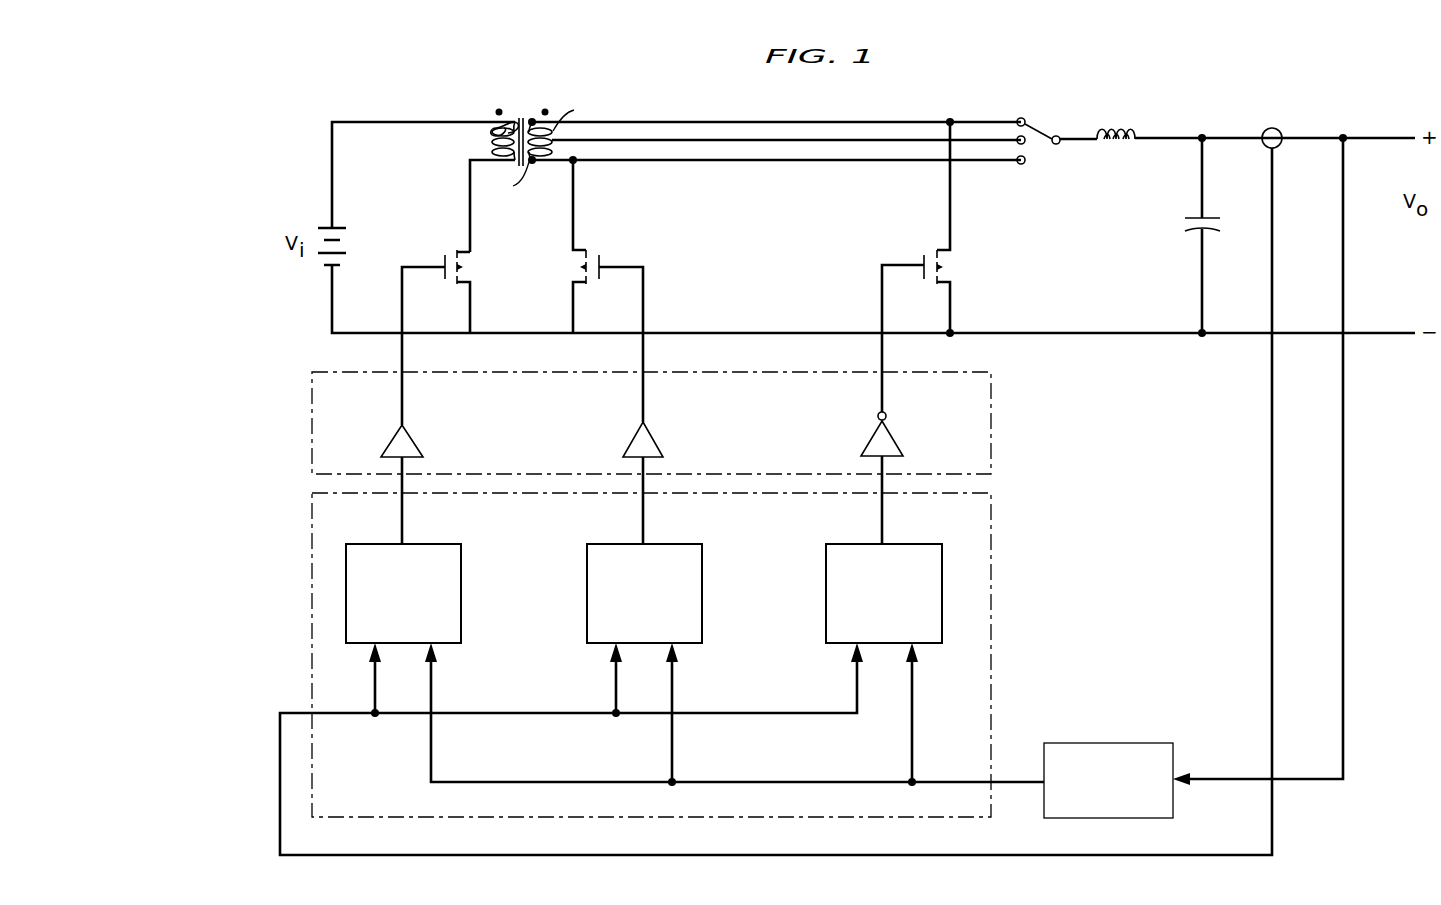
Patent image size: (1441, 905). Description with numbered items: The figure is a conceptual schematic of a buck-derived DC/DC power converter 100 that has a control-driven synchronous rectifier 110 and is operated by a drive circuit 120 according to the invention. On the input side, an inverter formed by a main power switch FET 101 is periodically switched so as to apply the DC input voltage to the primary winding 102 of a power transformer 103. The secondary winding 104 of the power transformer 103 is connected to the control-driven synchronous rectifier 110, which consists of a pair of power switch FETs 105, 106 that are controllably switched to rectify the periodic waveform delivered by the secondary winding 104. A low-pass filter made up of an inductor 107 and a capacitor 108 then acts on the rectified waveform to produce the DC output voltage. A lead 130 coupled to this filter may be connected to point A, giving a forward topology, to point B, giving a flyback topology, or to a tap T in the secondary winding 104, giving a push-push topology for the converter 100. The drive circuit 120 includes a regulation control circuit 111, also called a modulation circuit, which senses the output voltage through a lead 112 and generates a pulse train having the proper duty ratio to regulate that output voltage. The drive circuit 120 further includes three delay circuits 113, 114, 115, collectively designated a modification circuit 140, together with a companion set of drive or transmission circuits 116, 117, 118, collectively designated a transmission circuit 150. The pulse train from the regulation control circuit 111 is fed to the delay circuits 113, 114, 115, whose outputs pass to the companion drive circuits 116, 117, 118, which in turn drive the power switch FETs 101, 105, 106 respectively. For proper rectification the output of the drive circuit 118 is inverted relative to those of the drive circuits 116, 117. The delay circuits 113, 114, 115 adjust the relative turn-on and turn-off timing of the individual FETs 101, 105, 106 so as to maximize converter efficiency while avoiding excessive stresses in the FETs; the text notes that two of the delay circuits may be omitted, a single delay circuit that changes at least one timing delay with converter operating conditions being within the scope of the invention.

The buck-derived DC/DC power converter 100 is at (660, 93).
The main power switch FET 101 is at (441, 263).
The primary winding 102 is at (483, 146).
The power transformer 103 is at (520, 125).
The secondary winding 104 is at (562, 150).
The power switch FET 105 is at (605, 258).
The power switch FET 106 is at (918, 258).
The inductor 107 is at (1107, 152).
The capacitor 108 is at (1183, 226).
The control-driven synchronous rectifier 110 is at (774, 292).
The regulation control circuit 111 is at (1125, 743).
The lead 112 is at (1345, 445).
The delay circuit 113 is at (463, 614).
The delay circuit 114 is at (704, 578).
The delay circuit 115 is at (824, 608).
The drive circuit 116 is at (412, 441).
The drive circuit 117 is at (655, 441).
The drive circuit 118 is at (868, 441).
The drive circuit 120 is at (797, 840).
The lead 130 is at (1028, 118).
The modification circuit 140 is at (312, 527).
The transmission circuit 150 is at (523, 372).